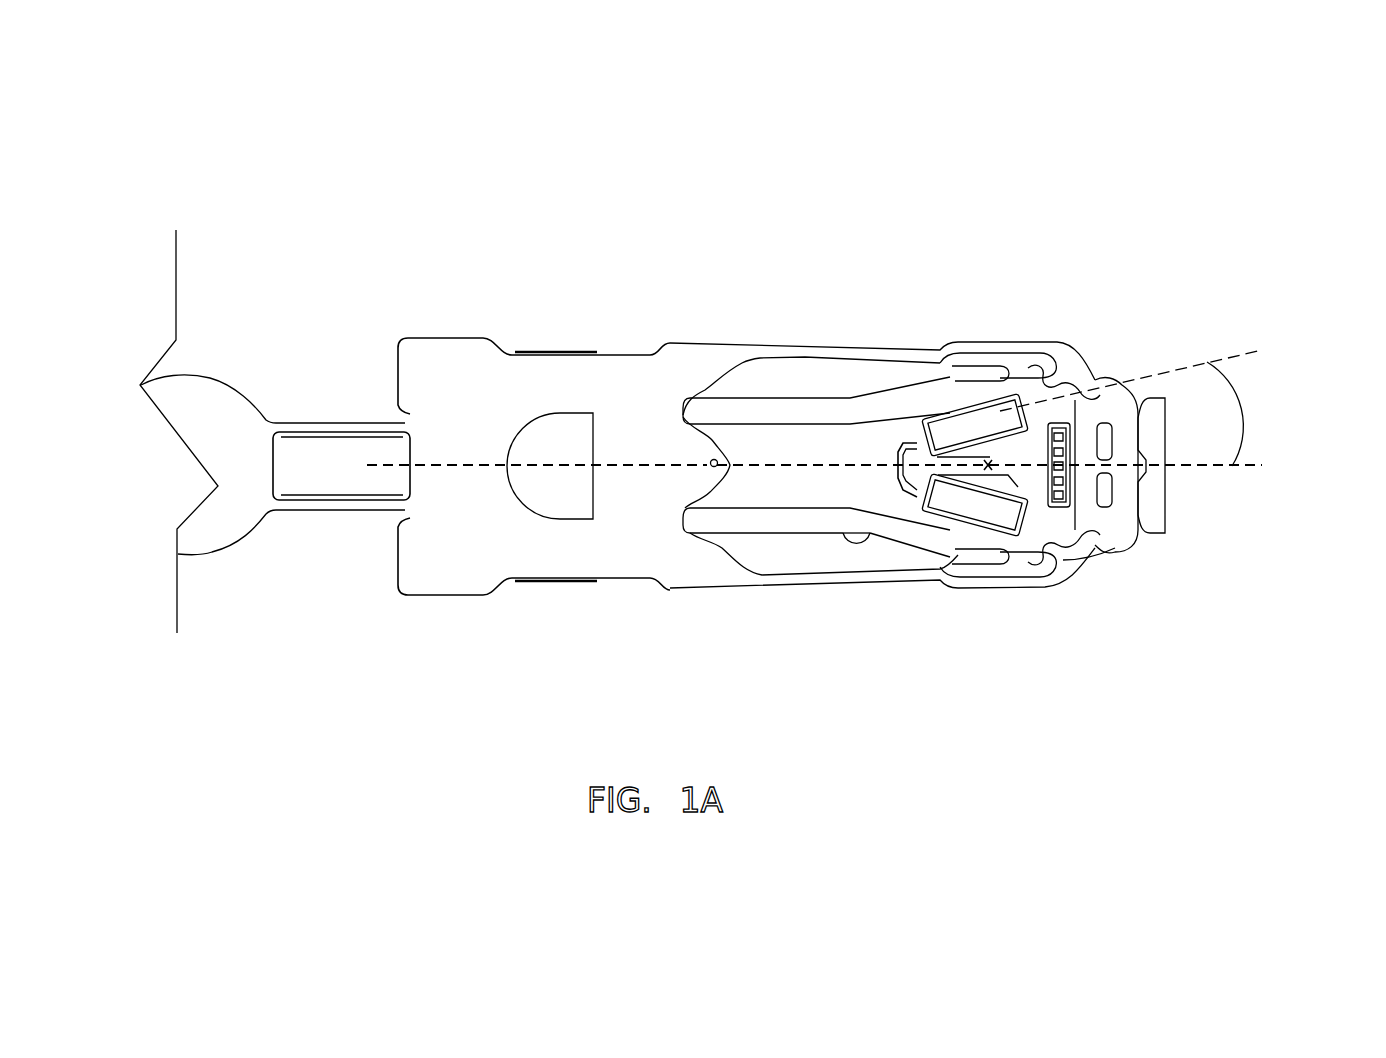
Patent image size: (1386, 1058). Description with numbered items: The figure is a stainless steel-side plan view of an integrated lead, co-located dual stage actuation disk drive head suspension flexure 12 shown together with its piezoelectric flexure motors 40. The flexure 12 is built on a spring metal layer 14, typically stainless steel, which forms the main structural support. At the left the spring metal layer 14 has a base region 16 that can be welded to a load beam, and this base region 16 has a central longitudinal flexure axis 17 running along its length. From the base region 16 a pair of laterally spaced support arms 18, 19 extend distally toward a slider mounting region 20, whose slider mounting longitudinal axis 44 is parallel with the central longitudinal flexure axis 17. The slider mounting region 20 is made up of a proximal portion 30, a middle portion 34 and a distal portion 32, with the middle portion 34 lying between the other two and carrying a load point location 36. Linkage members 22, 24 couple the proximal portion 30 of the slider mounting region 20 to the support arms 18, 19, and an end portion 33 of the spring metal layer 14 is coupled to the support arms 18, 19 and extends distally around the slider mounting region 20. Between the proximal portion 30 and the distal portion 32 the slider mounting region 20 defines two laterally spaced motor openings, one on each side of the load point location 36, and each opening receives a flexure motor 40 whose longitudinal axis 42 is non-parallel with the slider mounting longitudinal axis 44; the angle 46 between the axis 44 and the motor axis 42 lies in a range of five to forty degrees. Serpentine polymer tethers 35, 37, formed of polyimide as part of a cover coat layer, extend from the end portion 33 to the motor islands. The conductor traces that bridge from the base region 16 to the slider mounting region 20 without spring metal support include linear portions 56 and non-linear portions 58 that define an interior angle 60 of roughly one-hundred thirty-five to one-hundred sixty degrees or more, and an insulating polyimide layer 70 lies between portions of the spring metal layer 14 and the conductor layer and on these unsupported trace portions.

The flexure 12 is at (405, 193).
The spring metal layer 14 is at (423, 397).
The base region 16 is at (437, 336).
The central longitudinal flexure axis 17 is at (379, 455).
The support arm 18 is at (773, 343).
The support arm 19 is at (775, 578).
The slider mounting region 20 is at (1037, 479).
The linkage member 22 is at (987, 363).
The linkage member 24 is at (978, 558).
The proximal portion 30 is at (937, 445).
The distal portion 32 is at (1067, 555).
The end portion 33 is at (1122, 545).
The middle portion 34 is at (1000, 462).
The polymer tether 35 is at (1077, 552).
The load point location 36 is at (989, 440).
The polymer tether 37 is at (1080, 370).
The flexure motor 40 is at (915, 493).
The longitudinal axis of the flexure motor 42 is at (1210, 363).
The slider mounting longitudinal axis 44 is at (1187, 470).
The angle 46 is at (1243, 413).
The linear portion 56 is at (752, 512).
The non-linear portion 58 is at (898, 547).
The interior angle 60 is at (845, 548).
The insulating layer 70 is at (725, 533).